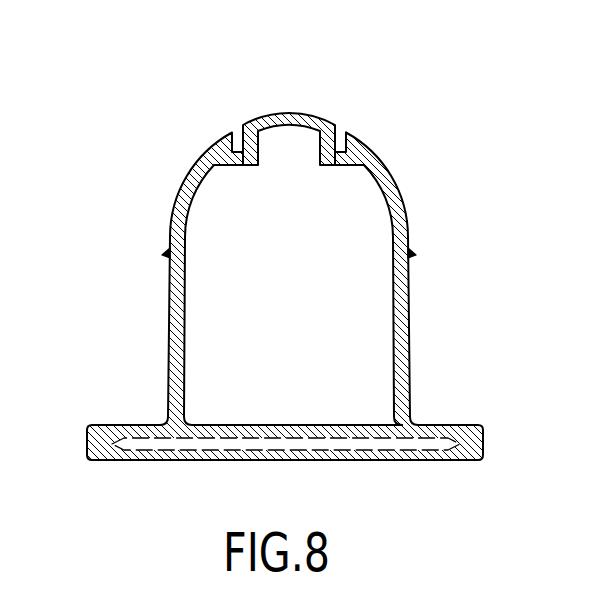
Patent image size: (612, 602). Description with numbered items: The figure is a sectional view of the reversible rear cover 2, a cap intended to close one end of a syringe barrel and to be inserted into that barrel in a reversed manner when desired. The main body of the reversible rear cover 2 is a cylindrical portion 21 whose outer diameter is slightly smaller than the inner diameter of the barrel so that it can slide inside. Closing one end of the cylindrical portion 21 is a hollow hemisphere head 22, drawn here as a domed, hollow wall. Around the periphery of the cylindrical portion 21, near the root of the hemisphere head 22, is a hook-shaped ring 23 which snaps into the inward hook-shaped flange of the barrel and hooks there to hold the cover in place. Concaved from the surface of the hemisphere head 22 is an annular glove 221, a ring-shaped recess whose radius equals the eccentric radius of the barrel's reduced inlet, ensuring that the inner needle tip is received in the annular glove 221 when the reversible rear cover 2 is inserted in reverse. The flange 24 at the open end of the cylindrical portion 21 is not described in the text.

The reversible rear cover 2 is at (448, 310).
The cylindrical portion 21 is at (177, 353).
The hollow hemisphere head 22 is at (262, 120).
The annular glove 221 is at (342, 128).
The hook-shaped ring 23 is at (165, 255).
The base flange 24 is at (453, 430).